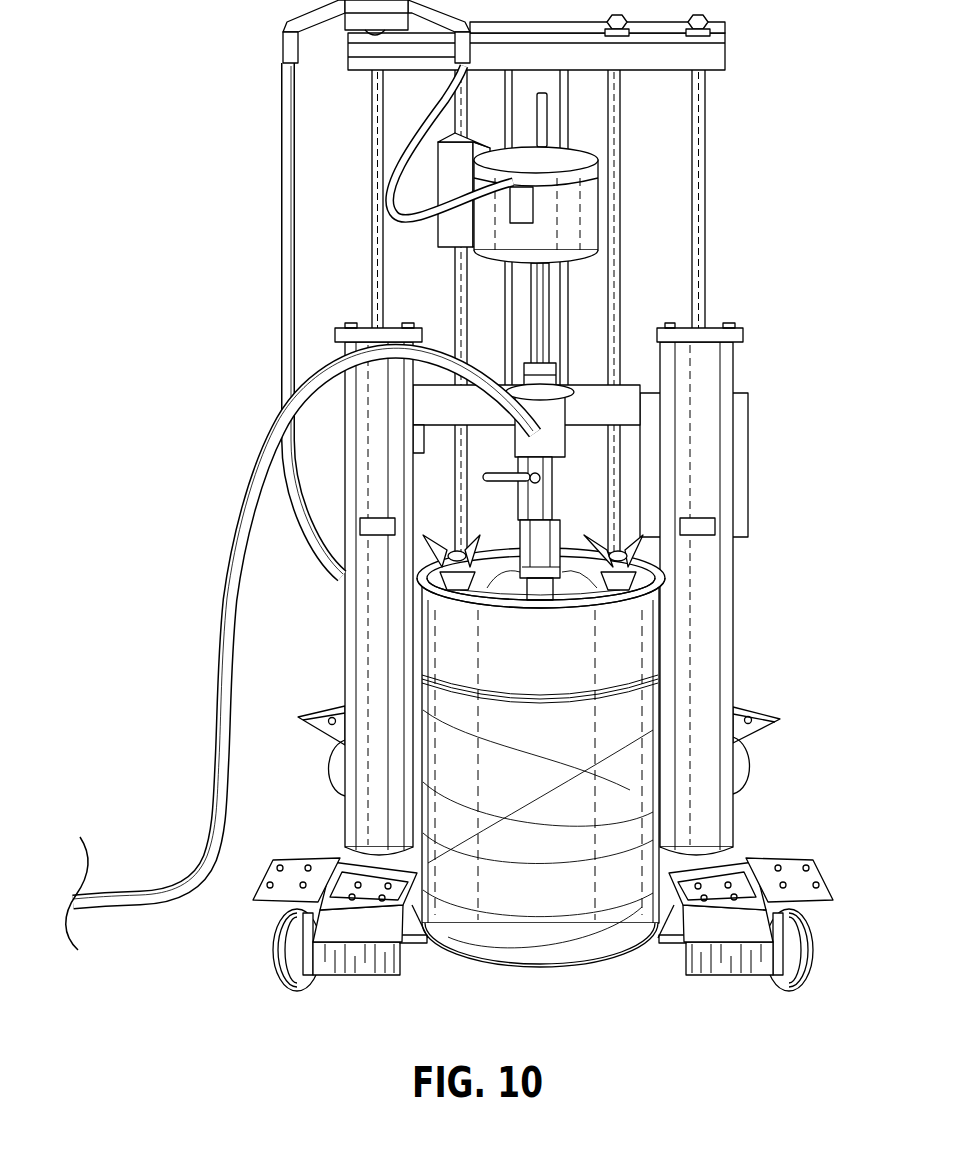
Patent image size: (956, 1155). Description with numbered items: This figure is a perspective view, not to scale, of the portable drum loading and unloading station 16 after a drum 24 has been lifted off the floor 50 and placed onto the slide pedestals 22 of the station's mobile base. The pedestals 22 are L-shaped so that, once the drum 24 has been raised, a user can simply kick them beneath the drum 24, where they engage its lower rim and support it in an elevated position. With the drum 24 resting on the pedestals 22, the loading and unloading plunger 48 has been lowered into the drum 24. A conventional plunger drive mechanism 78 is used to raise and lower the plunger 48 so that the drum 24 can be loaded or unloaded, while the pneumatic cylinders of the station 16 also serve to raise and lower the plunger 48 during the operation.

The portable drum loading and unloading station 16 is at (334, 817).
The slide pedestals 22 is at (422, 945).
The drum 24 is at (553, 662).
The loading and unloading plunger 48 is at (413, 577).
The floor 50 is at (553, 1021).
The plunger drive mechanism 78 is at (602, 204).